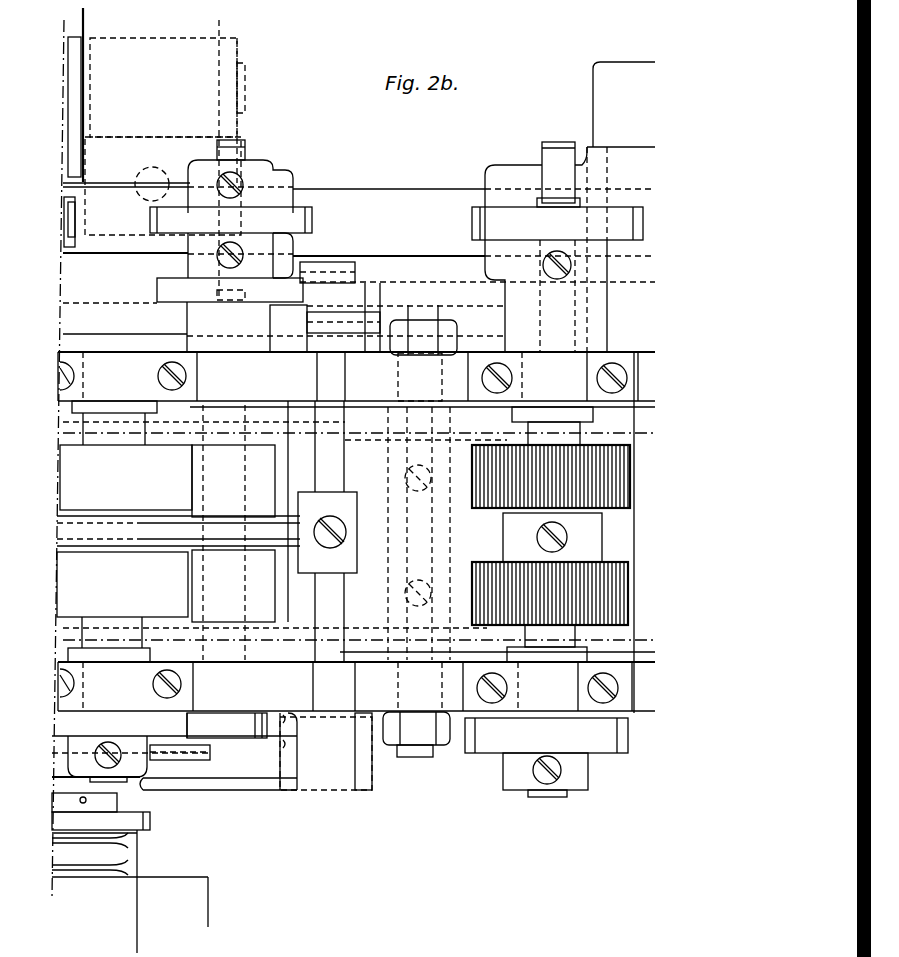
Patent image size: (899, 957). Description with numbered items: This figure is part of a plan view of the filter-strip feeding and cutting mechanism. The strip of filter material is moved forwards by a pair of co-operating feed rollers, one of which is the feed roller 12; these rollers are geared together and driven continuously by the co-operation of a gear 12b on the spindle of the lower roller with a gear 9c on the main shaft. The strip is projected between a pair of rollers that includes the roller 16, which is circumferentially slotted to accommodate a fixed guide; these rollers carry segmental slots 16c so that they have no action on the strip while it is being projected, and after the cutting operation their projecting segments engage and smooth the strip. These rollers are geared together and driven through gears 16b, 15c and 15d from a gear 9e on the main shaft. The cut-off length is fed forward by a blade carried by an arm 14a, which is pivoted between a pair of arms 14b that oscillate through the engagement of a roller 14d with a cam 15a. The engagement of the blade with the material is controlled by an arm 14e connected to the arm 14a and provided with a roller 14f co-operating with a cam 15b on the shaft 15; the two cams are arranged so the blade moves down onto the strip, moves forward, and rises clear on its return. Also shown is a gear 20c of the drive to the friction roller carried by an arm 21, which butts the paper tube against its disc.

The gear 9c is at (556, 140).
The gear 9e is at (238, 146).
The feed roller 12 is at (488, 482).
The gear 12b is at (477, 228).
The arm 14a is at (232, 532).
The arms 14b is at (352, 328).
The roller 14d is at (358, 283).
The arm 14e is at (262, 783).
The roller 14f is at (183, 762).
The shaft 15 is at (247, 440).
The cam 15a is at (168, 290).
The cam 15b is at (233, 753).
The gear 15c is at (248, 722).
The gear 15d is at (172, 221).
The roller 16 is at (213, 447).
The gear 16b is at (175, 722).
The segmental slots 16c is at (124, 531).
The gear 20c is at (142, 822).
The arm 21 is at (62, 857).